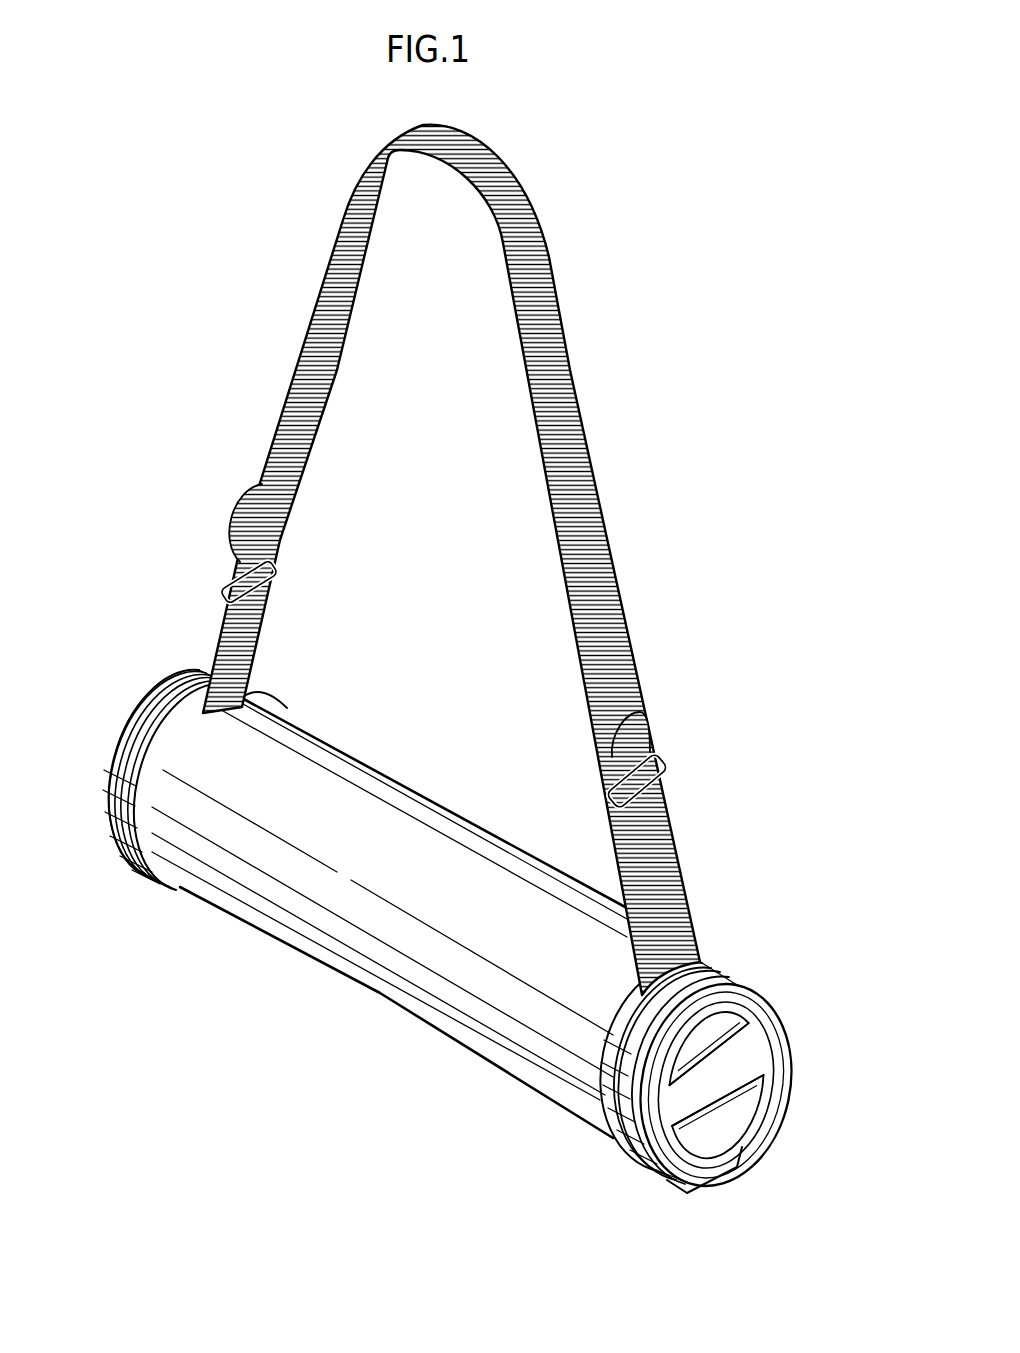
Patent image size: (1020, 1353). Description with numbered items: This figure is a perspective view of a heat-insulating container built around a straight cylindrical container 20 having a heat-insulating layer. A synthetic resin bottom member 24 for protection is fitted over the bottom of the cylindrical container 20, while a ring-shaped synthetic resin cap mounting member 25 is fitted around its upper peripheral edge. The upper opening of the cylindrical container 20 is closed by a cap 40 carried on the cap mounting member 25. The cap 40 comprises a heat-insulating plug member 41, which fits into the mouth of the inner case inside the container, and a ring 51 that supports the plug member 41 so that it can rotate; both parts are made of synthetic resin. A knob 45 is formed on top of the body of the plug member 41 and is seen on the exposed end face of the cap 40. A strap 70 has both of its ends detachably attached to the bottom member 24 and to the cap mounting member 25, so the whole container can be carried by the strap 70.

The cylindrical container 20 is at (428, 793).
The bottom member 24 is at (108, 793).
The cap mounting member 25 is at (748, 963).
The cap 40 is at (797, 1048).
The plug member 41 is at (760, 1103).
The knob 45 is at (700, 1100).
The ring 51 is at (785, 1010).
The strap 70 is at (568, 358).